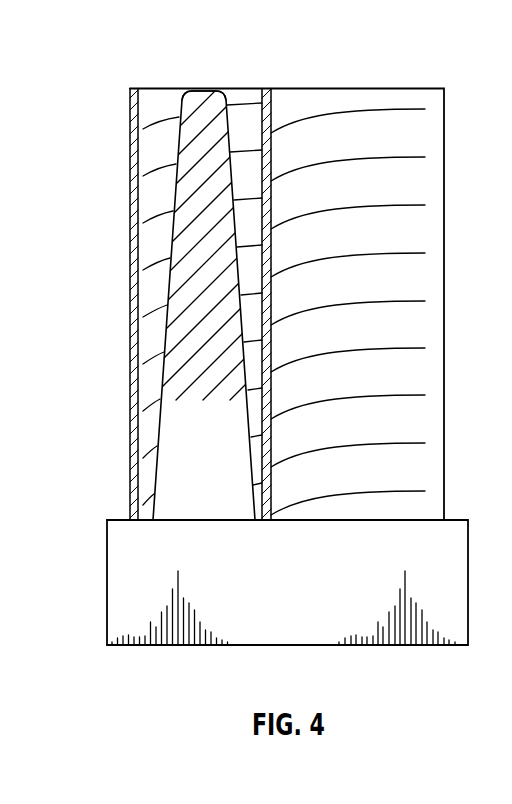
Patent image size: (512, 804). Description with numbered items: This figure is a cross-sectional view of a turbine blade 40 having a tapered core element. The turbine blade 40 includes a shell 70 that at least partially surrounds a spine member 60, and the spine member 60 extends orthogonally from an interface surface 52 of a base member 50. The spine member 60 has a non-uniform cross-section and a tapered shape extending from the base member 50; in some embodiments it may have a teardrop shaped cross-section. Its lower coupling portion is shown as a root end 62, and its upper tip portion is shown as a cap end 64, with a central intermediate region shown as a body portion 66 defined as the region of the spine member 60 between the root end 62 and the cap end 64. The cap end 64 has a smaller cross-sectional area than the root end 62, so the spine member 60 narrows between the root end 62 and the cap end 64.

The turbine blade 40 is at (118, 50).
The base member 50 is at (458, 539).
The interface surface 52 is at (115, 519).
The spine member 60 is at (256, 260).
The root end 62 is at (180, 502).
The cap end 64 is at (201, 99).
The body portion 66 is at (187, 333).
The shell 70 is at (427, 132).